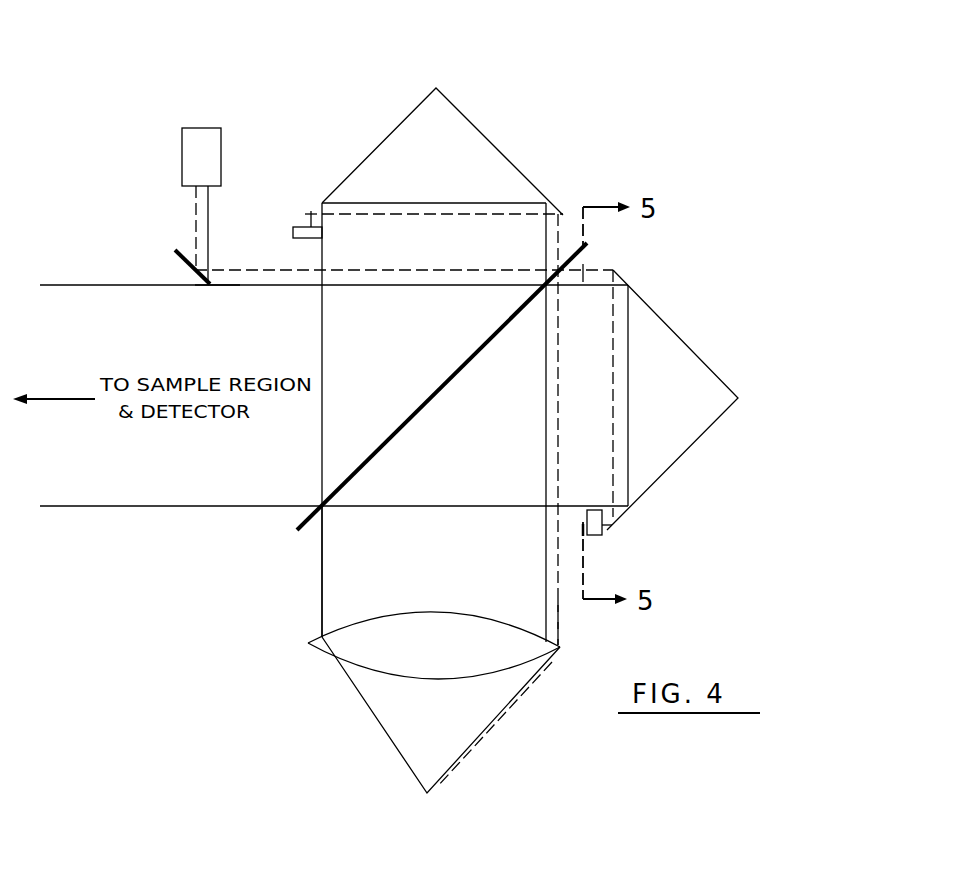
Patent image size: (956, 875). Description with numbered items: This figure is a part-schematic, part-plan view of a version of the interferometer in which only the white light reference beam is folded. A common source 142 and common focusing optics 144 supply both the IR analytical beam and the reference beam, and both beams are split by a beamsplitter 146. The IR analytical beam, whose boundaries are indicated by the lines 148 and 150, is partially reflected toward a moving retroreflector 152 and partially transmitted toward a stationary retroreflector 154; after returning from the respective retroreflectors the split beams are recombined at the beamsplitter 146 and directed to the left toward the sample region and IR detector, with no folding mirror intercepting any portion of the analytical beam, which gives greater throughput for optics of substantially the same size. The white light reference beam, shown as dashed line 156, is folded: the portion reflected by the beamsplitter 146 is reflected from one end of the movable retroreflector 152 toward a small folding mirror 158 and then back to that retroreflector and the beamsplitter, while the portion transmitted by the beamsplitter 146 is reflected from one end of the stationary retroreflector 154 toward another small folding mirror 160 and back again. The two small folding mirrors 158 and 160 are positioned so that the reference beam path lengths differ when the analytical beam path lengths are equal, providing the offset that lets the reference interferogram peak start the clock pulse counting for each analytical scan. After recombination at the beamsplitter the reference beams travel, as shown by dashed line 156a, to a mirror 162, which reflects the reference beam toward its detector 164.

The common source 142 is at (430, 793).
The common focusing optics 144 is at (370, 652).
The beamsplitter 146 is at (595, 246).
The analytical beam boundary 148 is at (320, 553).
The analytical beam boundary 150 is at (546, 562).
The moving retroreflector 152 is at (713, 351).
The stationary retroreflector 154 is at (500, 147).
The white light reference beam 156 is at (558, 617).
The recombined reference beam 156a is at (220, 285).
The small folding mirror 158 is at (606, 542).
The small folding mirror 160 is at (300, 243).
The mirror 162 is at (172, 250).
The detector 164 is at (198, 122).